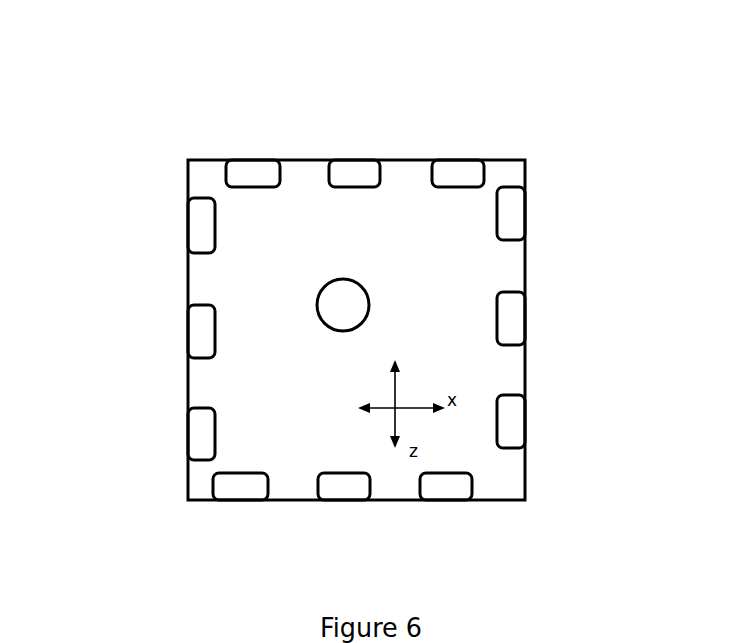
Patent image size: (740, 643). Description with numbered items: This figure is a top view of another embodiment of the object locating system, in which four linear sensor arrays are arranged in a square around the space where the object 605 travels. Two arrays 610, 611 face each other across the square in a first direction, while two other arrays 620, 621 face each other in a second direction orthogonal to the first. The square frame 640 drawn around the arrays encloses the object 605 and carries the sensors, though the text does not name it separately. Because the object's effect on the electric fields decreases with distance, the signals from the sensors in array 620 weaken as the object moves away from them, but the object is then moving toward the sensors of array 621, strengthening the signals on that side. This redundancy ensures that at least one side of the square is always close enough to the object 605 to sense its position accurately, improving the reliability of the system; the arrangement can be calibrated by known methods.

The sensor housing body 640 is at (305, 307).
The linear array 620 is at (430, 172).
The linear array 621 is at (372, 490).
The linear array 611 is at (199, 253).
The linear array 610 is at (509, 240).
The object 605 is at (490, 291).